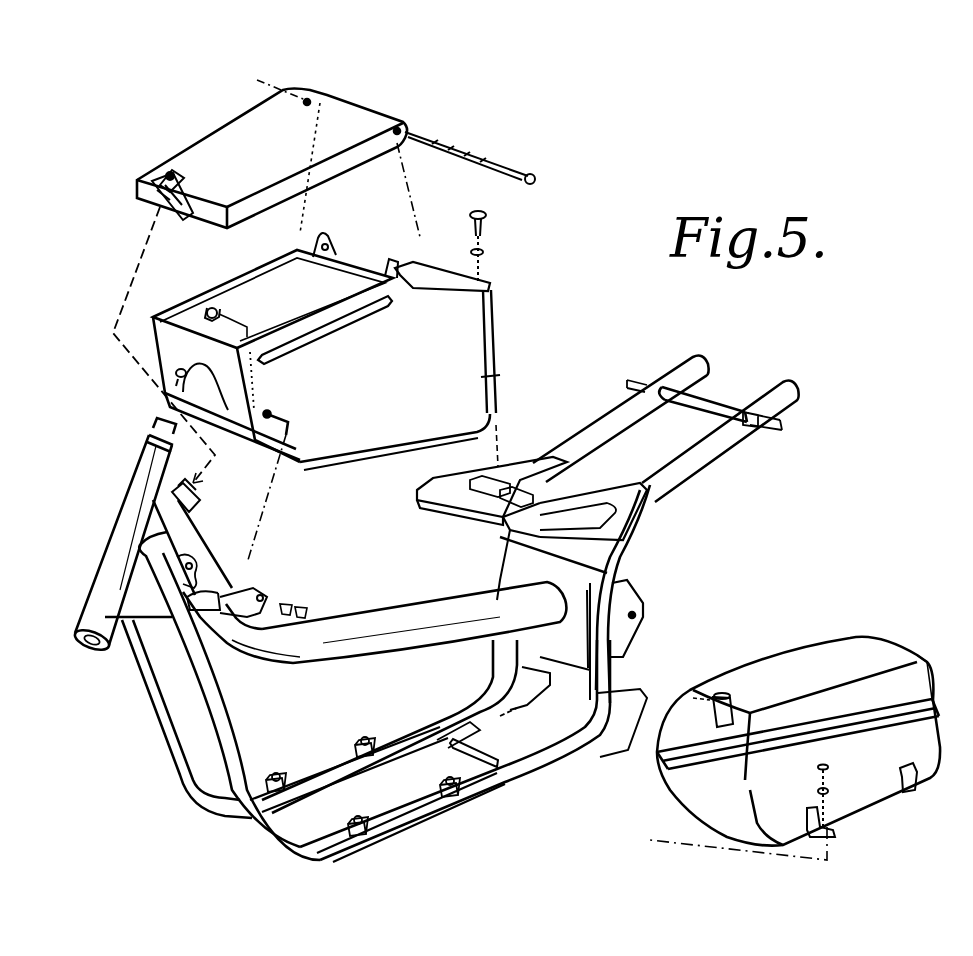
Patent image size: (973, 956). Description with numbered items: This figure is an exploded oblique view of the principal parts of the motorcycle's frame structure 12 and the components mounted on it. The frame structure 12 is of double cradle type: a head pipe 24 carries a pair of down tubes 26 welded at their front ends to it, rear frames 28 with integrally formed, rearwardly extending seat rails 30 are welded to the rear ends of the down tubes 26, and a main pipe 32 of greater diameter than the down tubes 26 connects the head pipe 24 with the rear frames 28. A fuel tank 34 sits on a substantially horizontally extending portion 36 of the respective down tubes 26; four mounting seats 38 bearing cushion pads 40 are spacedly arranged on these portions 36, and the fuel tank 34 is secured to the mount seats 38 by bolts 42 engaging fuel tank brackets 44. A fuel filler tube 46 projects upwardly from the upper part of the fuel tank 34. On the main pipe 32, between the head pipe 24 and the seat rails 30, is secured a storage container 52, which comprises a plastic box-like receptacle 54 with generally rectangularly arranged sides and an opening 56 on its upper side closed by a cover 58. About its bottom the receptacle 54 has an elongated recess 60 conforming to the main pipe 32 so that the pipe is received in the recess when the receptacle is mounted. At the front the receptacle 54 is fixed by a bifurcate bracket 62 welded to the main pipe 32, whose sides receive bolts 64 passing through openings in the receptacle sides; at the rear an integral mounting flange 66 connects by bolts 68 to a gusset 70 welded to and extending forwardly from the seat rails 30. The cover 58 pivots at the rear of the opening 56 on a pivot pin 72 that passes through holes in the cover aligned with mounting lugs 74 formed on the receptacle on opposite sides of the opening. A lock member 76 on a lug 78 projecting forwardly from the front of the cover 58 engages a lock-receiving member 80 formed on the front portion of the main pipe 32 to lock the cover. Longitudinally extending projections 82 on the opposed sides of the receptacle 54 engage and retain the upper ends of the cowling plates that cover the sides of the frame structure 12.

The frame structure 12 is at (376, 697).
The head pipe 24 is at (122, 509).
The down tubes 26 is at (160, 717).
The rear frames 28 is at (510, 645).
The seat rails 30 is at (703, 460).
The main pipe 32 is at (412, 640).
The fuel tank 34 is at (800, 650).
The horizontally extending portion 36 is at (329, 770).
The mounting seats 38 is at (283, 788).
The cushion pads 40 is at (276, 773).
The bolts 42 is at (830, 773).
The fuel tank brackets 44 is at (917, 792).
The fuel filler tube 46 is at (733, 697).
The storage container 52 is at (495, 339).
The box-like receptacle 54 is at (499, 375).
The opening 56 is at (242, 286).
The cover 58 is at (233, 123).
The elongated recess 60 is at (186, 377).
The bifurcate bracket 62 is at (203, 617).
The bolts 64 is at (220, 313).
The mounting flange 66 is at (440, 268).
The bolts 68 is at (484, 226).
The gusset 70 is at (525, 468).
The pivot pin 72 is at (495, 163).
The mounting lugs 74 is at (318, 240).
The lock member 76 is at (178, 170).
The lug 78 is at (183, 195).
The lock-receiving member 80 is at (195, 500).
The projections 82 is at (330, 333).